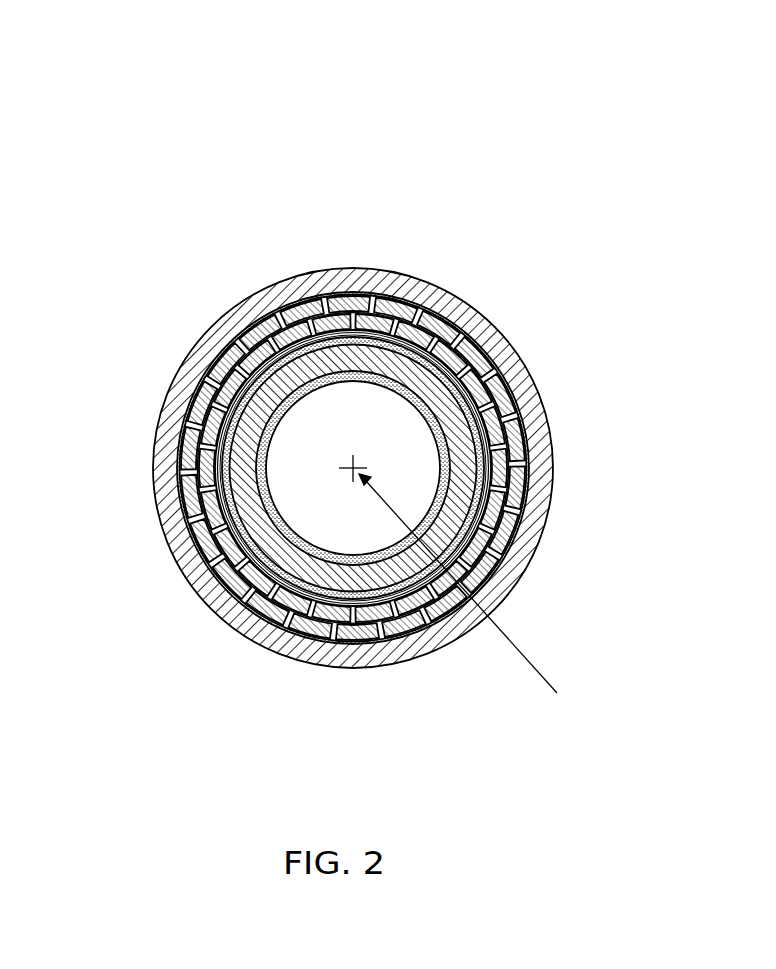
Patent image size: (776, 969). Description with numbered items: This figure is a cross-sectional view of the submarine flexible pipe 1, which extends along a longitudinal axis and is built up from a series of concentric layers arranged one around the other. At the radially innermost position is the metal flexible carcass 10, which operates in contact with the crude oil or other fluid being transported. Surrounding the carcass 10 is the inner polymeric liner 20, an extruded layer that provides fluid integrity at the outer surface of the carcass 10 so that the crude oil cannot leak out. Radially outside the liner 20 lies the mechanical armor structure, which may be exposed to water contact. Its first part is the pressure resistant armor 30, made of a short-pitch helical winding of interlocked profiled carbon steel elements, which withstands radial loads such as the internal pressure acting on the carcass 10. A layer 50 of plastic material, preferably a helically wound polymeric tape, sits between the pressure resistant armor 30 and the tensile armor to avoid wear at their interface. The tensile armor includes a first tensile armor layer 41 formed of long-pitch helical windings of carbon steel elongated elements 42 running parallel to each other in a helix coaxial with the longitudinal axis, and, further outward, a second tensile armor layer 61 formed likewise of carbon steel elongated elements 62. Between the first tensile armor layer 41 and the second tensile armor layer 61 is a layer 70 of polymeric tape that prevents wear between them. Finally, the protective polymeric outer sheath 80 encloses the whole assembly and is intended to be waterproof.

The submarine flexible pipe 1 is at (593, 243).
The metal flexible carcass 10 is at (188, 587).
The inner polymeric liner 20 is at (233, 615).
The pressure resistant armor 30 is at (420, 605).
The first tensile armor layer 41 is at (527, 525).
The carbon steel elongated elements 42 is at (527, 480).
The layer of plastic material 50 is at (528, 380).
The second tensile armor layer 61 is at (225, 336).
The carbon steel elongated elements 62 is at (195, 397).
The layer of polymeric material 70 is at (293, 295).
The protective polymeric outer sheath 80 is at (363, 275).